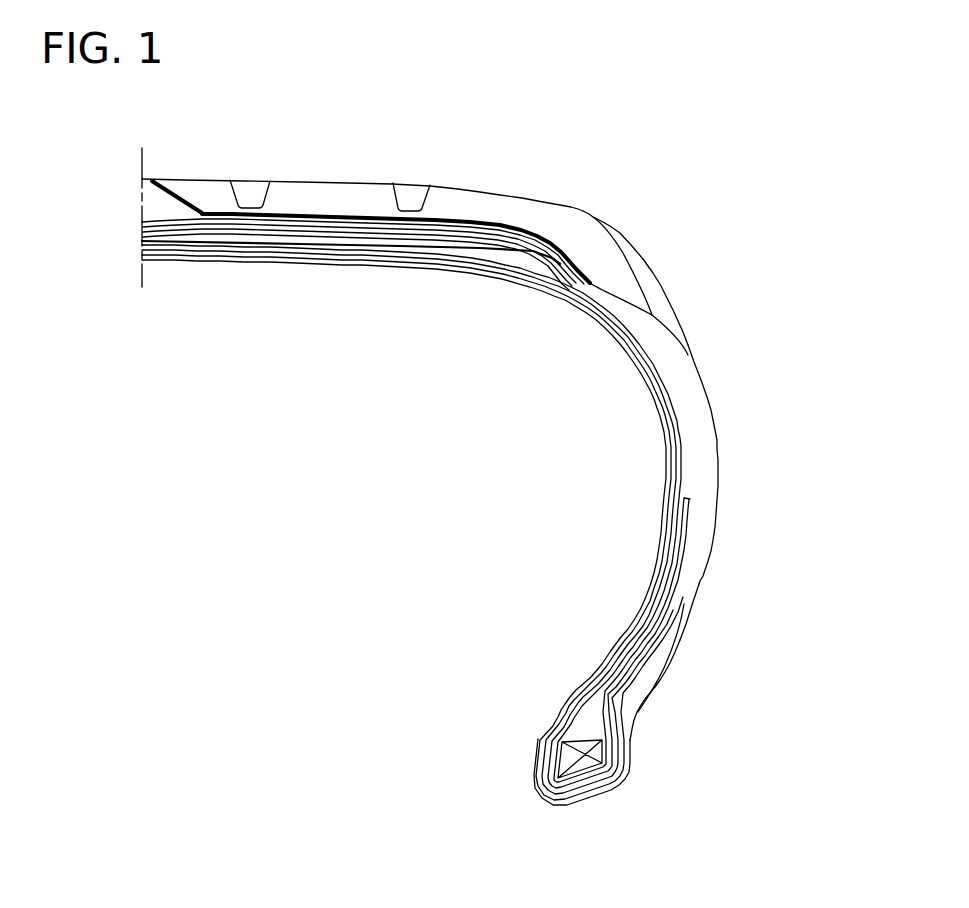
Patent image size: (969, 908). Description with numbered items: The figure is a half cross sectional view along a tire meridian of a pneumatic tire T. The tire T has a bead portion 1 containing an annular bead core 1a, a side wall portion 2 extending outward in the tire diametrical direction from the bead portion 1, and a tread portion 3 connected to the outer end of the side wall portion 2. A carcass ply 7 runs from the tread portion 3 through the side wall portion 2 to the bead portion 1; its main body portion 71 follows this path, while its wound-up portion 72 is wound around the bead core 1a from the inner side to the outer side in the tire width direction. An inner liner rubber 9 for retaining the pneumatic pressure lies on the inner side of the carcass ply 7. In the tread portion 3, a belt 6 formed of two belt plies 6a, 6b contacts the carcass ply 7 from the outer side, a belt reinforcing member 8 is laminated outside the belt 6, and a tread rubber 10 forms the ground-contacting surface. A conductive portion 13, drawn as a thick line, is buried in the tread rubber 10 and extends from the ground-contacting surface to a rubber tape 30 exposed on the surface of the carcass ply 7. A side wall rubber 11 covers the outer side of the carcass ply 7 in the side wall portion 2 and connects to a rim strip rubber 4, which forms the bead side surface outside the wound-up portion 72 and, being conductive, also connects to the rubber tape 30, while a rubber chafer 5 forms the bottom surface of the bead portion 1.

The pneumatic tire T is at (648, 140).
The bead portion 1 is at (648, 791).
The bead core 1a is at (585, 740).
The side wall portion 2 is at (757, 415).
The tread portion 3 is at (407, 163).
The rim strip rubber 4 is at (650, 675).
The rubber chafer 5 is at (593, 790).
The belt 6 is at (350, 333).
The belt ply 6a is at (283, 239).
The belt ply 6b is at (330, 233).
The carcass ply 7 is at (440, 254).
The belt reinforcing member 8 is at (353, 218).
The inner liner rubber 9 is at (168, 262).
The tread rubber 10 is at (303, 190).
The side wall rubber 11 is at (712, 450).
The conductive portion 13 is at (497, 220).
The rubber tape 30 is at (632, 347).
The main body portion 71 is at (670, 483).
The wound-up portion 72 is at (693, 527).